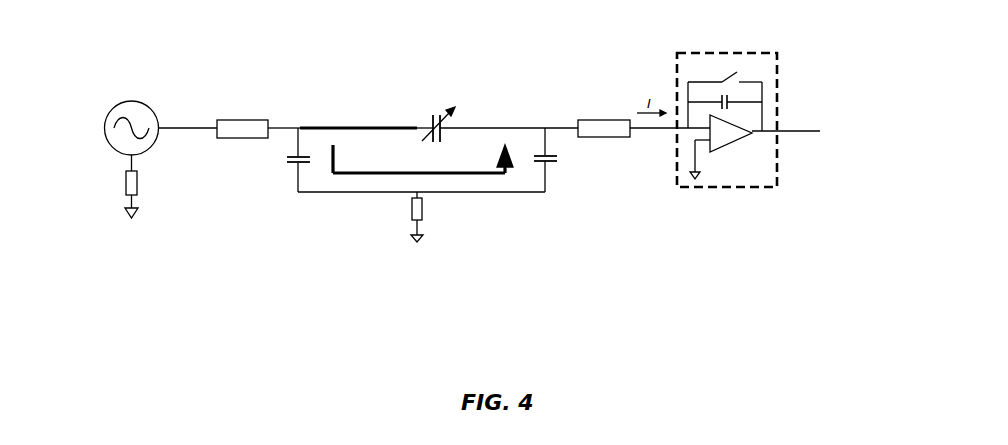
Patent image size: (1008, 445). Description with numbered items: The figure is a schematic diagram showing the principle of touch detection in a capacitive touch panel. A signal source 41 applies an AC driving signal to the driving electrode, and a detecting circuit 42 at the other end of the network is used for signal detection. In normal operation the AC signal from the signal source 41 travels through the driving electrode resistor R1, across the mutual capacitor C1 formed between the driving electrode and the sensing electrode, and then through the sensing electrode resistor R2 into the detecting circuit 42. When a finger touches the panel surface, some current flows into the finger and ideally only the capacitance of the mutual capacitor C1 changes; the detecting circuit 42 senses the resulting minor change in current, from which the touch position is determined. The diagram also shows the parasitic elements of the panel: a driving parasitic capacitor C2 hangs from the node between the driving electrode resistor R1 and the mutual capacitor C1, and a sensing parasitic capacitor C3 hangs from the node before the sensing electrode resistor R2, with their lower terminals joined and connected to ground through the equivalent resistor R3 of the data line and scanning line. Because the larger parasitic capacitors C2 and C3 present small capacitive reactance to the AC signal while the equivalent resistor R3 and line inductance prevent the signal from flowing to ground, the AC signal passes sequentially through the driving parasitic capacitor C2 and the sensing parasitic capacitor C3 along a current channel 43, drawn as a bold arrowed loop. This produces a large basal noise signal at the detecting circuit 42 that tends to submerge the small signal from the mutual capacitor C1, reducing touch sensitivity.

The signal source 41 is at (132, 148).
The driving electrode resistor R1 is at (242, 117).
The mutual capacitor C1 is at (438, 110).
The driving parasitic capacitor C2 is at (285, 163).
The sensing parasitic capacitor C3 is at (559, 160).
The sensing electrode resistor R2 is at (604, 116).
The equivalent resistor R3 is at (402, 217).
The detecting circuit 42 is at (672, 67).
The current channel 43 is at (333, 178).